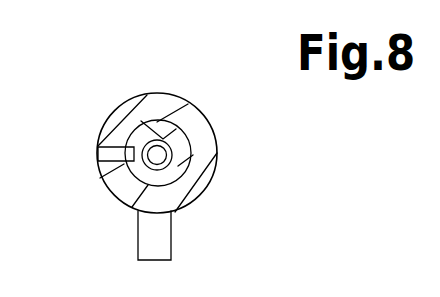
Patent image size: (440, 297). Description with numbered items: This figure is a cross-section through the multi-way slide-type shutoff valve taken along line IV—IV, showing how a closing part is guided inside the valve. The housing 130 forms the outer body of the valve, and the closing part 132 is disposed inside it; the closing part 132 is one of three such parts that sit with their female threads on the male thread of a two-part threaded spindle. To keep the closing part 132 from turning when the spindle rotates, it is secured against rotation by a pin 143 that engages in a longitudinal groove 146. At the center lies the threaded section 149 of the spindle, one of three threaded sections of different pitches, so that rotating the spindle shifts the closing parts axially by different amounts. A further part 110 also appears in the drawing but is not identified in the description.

The shaft 110 is at (158, 243).
The housing 130 is at (190, 181).
The closing part 132 is at (186, 154).
The pin 143 is at (103, 179).
The longitudinal groove 146 is at (106, 144).
The threaded section 149 is at (158, 153).